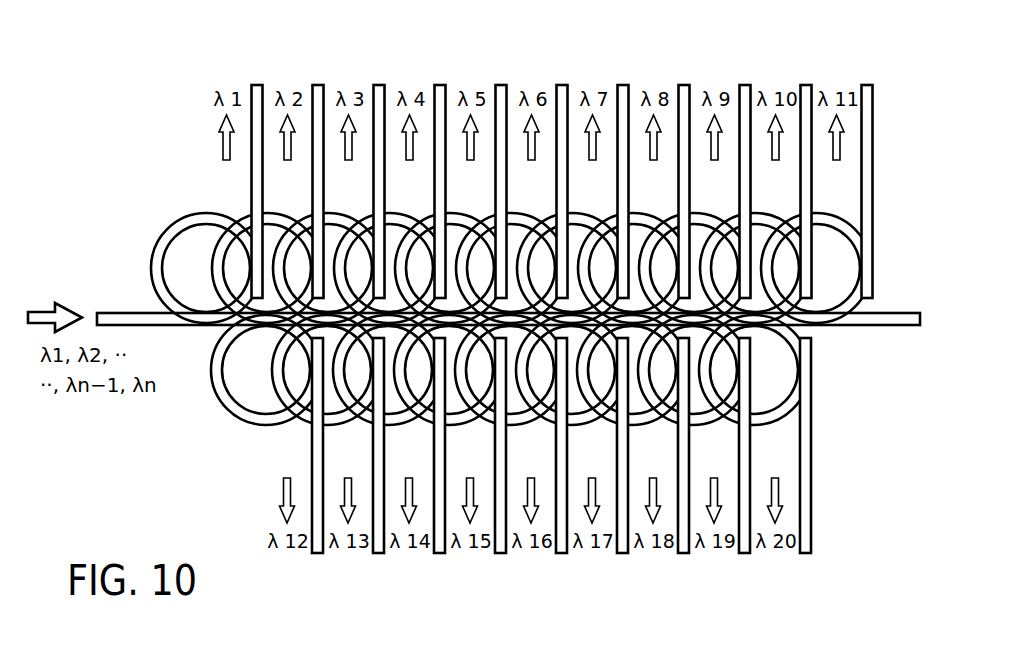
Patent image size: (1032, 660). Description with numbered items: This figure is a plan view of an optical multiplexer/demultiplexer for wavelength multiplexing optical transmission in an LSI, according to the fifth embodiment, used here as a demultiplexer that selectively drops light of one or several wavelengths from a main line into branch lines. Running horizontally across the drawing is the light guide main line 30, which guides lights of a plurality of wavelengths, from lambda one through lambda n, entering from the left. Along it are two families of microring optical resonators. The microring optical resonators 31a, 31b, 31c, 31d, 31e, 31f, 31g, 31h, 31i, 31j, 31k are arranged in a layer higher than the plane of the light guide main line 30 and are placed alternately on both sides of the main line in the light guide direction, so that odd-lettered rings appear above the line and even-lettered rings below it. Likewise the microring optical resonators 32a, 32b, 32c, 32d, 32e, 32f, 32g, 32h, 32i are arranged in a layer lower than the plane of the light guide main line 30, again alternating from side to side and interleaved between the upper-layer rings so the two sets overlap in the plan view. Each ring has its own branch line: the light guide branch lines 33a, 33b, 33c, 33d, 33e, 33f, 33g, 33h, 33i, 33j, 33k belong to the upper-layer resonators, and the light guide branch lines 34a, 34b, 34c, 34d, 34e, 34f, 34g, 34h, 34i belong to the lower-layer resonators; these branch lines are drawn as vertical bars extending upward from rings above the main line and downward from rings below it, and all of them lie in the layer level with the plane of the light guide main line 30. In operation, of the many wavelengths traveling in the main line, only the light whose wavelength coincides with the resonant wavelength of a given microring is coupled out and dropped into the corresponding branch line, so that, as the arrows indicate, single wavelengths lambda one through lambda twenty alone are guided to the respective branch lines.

The light guide main line 30 is at (899, 312).
The microring optical resonator 31a is at (209, 213).
The microring optical resonator 31b is at (268, 425).
The microring optical resonator 31c is at (343, 213).
The microring optical resonator 31d is at (400, 425).
The microring optical resonator 31e is at (465, 213).
The microring optical resonator 31f is at (522, 425).
The microring optical resonator 31g is at (587, 213).
The microring optical resonator 31h is at (644, 425).
The microring optical resonator 31i is at (709, 213).
The microring optical resonator 31j is at (766, 425).
The microring optical resonator 31k is at (831, 213).
The microring optical resonator 32a is at (282, 213).
The microring optical resonator 32b is at (339, 425).
The microring optical resonator 32c is at (404, 213).
The microring optical resonator 32d is at (461, 425).
The microring optical resonator 32e is at (526, 213).
The microring optical resonator 32f is at (583, 425).
The microring optical resonator 32g is at (648, 213).
The microring optical resonator 32h is at (705, 425).
The microring optical resonator 32i is at (770, 213).
The light guide branch line 33a is at (257, 83).
The light guide branch line 33b is at (318, 555).
The light guide branch line 33c is at (379, 83).
The light guide branch line 33d is at (440, 555).
The light guide branch line 33e is at (501, 83).
The light guide branch line 33f is at (562, 555).
The light guide branch line 33g is at (623, 83).
The light guide branch line 33h is at (684, 555).
The light guide branch line 33i is at (745, 83).
The light guide branch line 33j is at (806, 555).
The light guide branch line 33k is at (867, 83).
The light guide branch line 34a is at (318, 83).
The light guide branch line 34b is at (378, 555).
The light guide branch line 34c is at (440, 83).
The light guide branch line 34d is at (500, 555).
The light guide branch line 34e is at (562, 83).
The light guide branch line 34f is at (622, 555).
The light guide branch line 34g is at (684, 83).
The light guide branch line 34h is at (744, 555).
The light guide branch line 34i is at (806, 83).